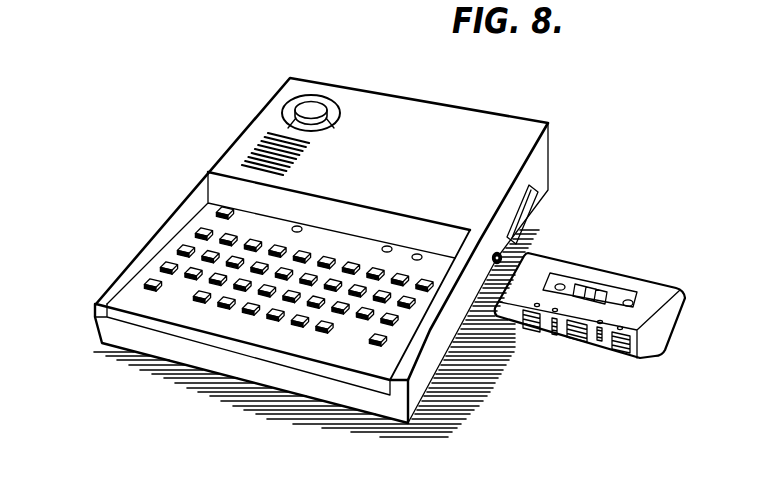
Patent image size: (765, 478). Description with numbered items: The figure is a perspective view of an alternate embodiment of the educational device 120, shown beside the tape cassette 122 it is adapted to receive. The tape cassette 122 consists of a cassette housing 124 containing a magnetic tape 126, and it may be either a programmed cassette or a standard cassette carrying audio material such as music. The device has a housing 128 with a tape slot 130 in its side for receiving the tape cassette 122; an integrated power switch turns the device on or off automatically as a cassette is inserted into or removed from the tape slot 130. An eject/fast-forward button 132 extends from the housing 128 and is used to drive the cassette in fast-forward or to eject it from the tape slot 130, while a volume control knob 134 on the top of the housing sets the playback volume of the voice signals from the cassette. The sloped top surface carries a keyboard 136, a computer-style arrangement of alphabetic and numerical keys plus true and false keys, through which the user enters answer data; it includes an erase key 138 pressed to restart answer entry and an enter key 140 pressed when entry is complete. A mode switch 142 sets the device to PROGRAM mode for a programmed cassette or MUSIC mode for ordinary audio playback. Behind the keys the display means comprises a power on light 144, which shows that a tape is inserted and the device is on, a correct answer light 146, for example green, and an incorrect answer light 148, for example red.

The educational device 120 is at (584, 93).
The tape cassette 122 is at (607, 292).
The cassette housing 124 is at (673, 280).
The magnetic tape 126 is at (571, 340).
The housing 128 is at (360, 88).
The tape slot 130 is at (536, 199).
The eject/fast-forward button 132 is at (522, 238).
The volume control knob 134 is at (310, 112).
The keyboard 136 is at (80, 262).
The erase key 138 is at (152, 290).
The enter key 140 is at (374, 346).
The mode switch 142 is at (222, 208).
The power on light 144 is at (298, 226).
The correct answer light 146 is at (387, 246).
The incorrect answer light 148 is at (418, 254).